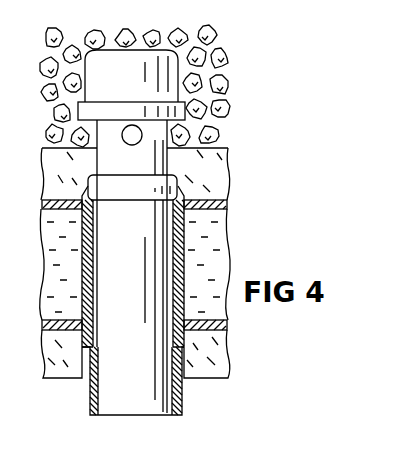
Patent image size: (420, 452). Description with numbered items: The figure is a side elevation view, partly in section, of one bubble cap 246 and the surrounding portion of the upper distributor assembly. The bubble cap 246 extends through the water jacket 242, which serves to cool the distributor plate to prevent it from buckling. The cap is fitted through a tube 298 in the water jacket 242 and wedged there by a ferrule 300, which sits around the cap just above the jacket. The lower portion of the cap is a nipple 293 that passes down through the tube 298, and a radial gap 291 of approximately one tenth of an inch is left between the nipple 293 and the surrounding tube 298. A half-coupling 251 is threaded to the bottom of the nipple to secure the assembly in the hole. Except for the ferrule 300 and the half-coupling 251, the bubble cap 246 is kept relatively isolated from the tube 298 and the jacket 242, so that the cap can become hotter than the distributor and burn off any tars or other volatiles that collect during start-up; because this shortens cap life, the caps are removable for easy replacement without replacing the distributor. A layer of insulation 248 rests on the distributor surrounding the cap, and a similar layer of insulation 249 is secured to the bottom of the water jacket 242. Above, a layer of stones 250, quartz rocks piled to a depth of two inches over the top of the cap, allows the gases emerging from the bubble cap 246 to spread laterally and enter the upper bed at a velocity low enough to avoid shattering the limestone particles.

The bubble cap 246 is at (182, 65).
The stones 250 is at (222, 108).
The insulation 248 is at (217, 158).
The ferrule 300 is at (178, 186).
The tube 298 is at (183, 260).
The nipple 293 is at (107, 257).
The radial gap 291 is at (95, 292).
The water jacket 242 is at (215, 330).
The insulation 249 is at (225, 376).
The half-coupling 251 is at (181, 397).